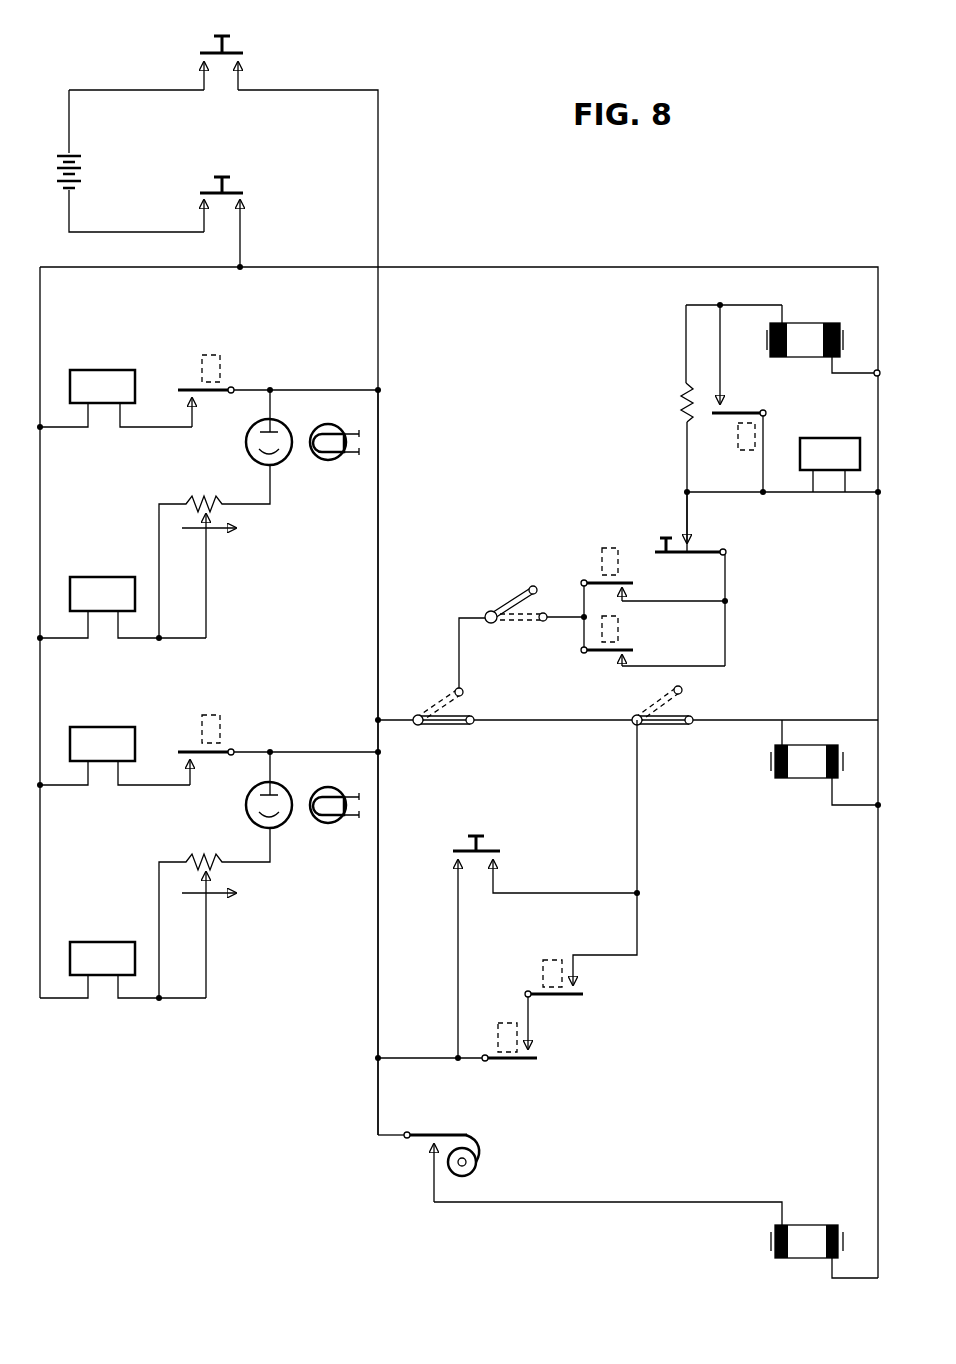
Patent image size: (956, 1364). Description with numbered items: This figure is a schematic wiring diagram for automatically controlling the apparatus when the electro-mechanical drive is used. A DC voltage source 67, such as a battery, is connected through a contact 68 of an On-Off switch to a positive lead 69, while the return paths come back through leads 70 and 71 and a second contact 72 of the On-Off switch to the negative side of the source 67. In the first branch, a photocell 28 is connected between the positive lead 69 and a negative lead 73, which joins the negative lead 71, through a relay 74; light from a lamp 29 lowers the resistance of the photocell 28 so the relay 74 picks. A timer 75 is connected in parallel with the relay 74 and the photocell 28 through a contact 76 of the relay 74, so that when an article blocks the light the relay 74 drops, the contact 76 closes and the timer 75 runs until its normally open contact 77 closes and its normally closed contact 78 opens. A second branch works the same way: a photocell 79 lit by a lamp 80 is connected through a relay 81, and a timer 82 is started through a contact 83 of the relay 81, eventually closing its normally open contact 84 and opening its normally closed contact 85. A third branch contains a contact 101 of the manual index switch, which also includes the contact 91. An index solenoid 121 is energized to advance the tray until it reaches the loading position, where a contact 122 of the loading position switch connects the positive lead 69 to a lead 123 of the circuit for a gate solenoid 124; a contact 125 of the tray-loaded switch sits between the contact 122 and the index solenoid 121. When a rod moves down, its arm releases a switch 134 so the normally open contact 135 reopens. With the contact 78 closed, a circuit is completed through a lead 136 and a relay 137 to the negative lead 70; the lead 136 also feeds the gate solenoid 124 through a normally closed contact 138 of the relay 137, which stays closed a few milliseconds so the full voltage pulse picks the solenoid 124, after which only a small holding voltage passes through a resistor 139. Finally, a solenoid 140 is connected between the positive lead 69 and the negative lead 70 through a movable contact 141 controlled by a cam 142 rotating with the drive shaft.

The contact of On-Off switch 68 is at (210, 48).
The DC voltage source 67 is at (82, 186).
The second contact of On-Off switch 72 is at (237, 192).
The lead 71 is at (241, 246).
The lead 70 is at (521, 265).
The positive lead 69 is at (380, 522).
The timer 82 is at (90, 375).
The contact of relay 83 is at (186, 389).
The relay 81 is at (220, 372).
The photocell 79 is at (246, 443).
The lamp 80 is at (337, 460).
The negative lead 73 is at (40, 707).
The timer 75 is at (90, 735).
The contact of relay 76 is at (193, 751).
The relay 74 is at (221, 731).
The photocell 28 is at (246, 806).
The lamp 29 is at (336, 826).
The gate solenoid 124 is at (803, 328).
The resistor 139 is at (677, 405).
The normally closed contact of relay 138 is at (730, 410).
The relay 137 is at (738, 437).
The lead 136 is at (715, 494).
The contact of manual index switch 91 is at (660, 547).
The normally closed contact of timer 85 is at (630, 582).
The switch 134 is at (529, 592).
The normally open contact of switch 135 is at (534, 587).
The lead 123 is at (457, 661).
The contact of loading position switch 122 is at (470, 725).
The normally closed contact of timer 78 is at (608, 653).
The contact of switch 125 is at (689, 725).
The index solenoid 121 is at (800, 745).
The contact of manual index switch 101 is at (492, 850).
The normally open contact of timer 77 is at (560, 996).
The normally open contact of timer 84 is at (520, 1060).
The movable contact 141 is at (430, 1134).
The cam 142 is at (472, 1152).
The solenoid 140 is at (805, 1235).